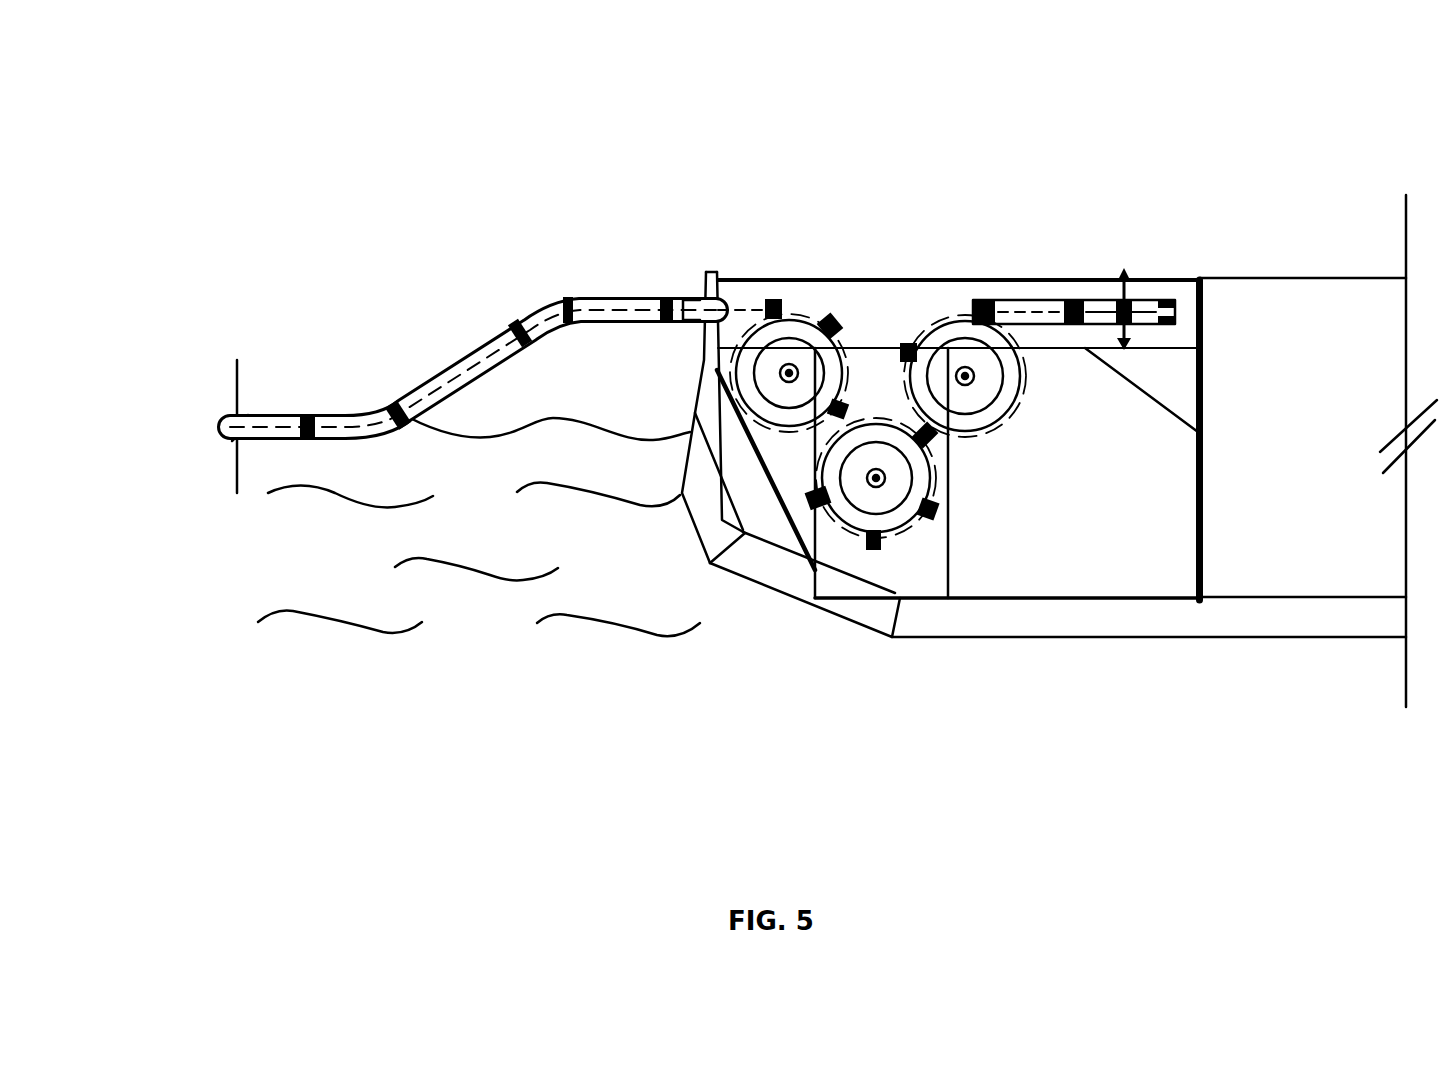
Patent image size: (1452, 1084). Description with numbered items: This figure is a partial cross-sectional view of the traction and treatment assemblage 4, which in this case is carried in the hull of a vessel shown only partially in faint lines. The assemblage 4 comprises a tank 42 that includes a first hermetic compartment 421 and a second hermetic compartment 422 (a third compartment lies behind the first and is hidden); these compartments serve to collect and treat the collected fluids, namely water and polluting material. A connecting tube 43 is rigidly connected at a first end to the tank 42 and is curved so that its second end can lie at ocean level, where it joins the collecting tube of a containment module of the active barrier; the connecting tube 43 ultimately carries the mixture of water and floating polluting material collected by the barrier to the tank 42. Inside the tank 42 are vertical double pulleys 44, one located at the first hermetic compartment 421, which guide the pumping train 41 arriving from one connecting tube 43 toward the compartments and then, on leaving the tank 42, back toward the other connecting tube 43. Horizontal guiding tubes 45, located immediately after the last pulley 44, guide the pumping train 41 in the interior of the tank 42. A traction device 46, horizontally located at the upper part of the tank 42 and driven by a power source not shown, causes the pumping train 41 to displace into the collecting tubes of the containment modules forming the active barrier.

The traction and treatment assemblage 4 is at (672, 172).
The pumping train 41 is at (205, 425).
The tank 42 is at (1202, 375).
The first hermetic compartment 421 is at (935, 575).
The second hermetic compartment 422 is at (1078, 550).
The connecting tube 43 is at (445, 360).
The vertical double pulley 44 is at (870, 488).
The horizontal guiding tube 45 is at (1019, 300).
The traction device 46 is at (1125, 270).